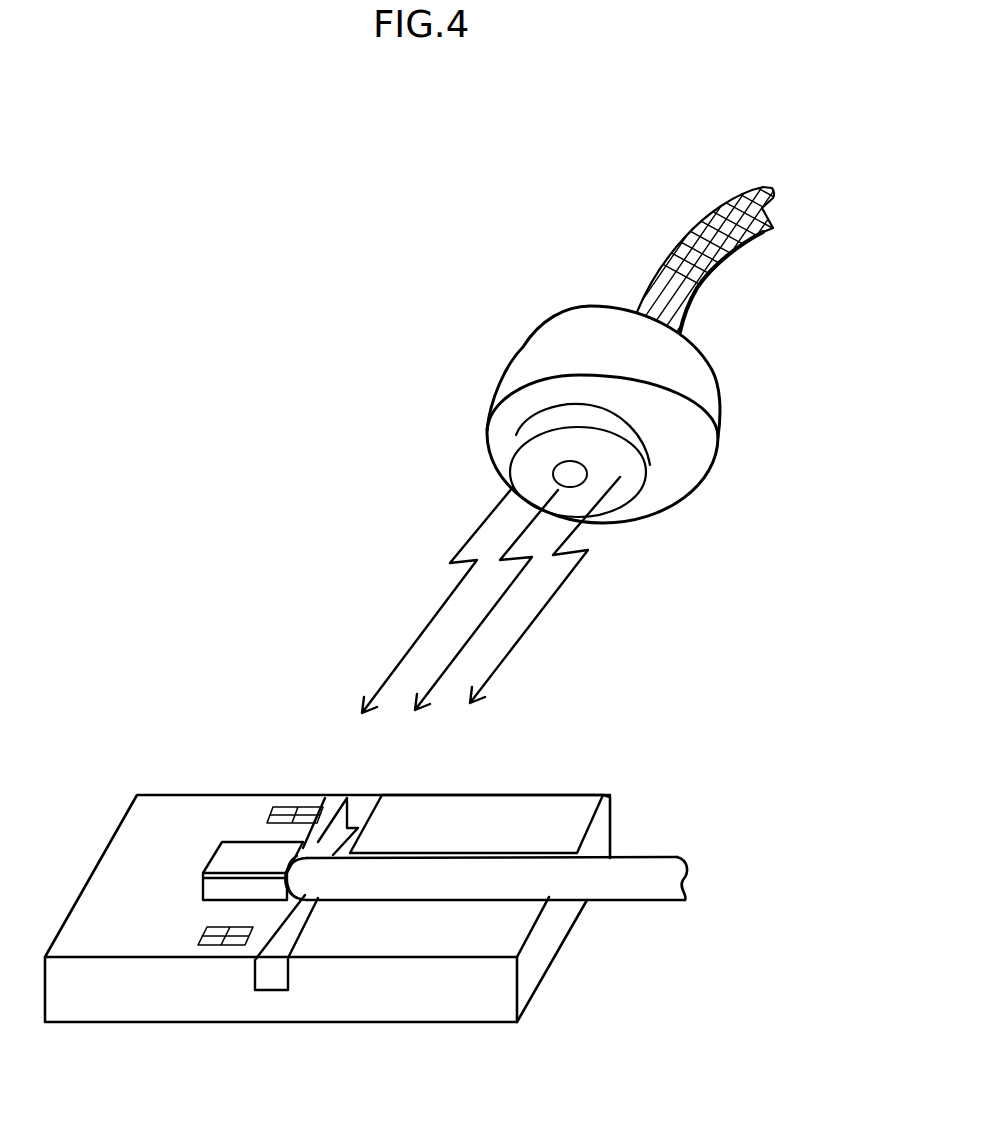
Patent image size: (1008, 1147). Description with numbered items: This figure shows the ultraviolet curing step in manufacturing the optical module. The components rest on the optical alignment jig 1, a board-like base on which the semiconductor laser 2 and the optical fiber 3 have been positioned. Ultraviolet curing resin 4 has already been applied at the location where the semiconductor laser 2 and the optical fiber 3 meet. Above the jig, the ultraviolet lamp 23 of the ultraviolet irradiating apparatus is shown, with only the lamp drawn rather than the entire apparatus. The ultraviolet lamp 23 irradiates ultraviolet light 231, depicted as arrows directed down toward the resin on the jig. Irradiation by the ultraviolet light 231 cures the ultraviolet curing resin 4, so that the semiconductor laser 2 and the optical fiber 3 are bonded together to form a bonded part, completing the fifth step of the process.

The optical alignment jig 1 is at (360, 1000).
The semiconductor laser 2 is at (236, 851).
The optical fiber 3 is at (423, 852).
The ultraviolet curing resin 4 is at (306, 848).
The ultraviolet lamp 23 is at (718, 440).
The ultraviolet light 231 is at (557, 612).